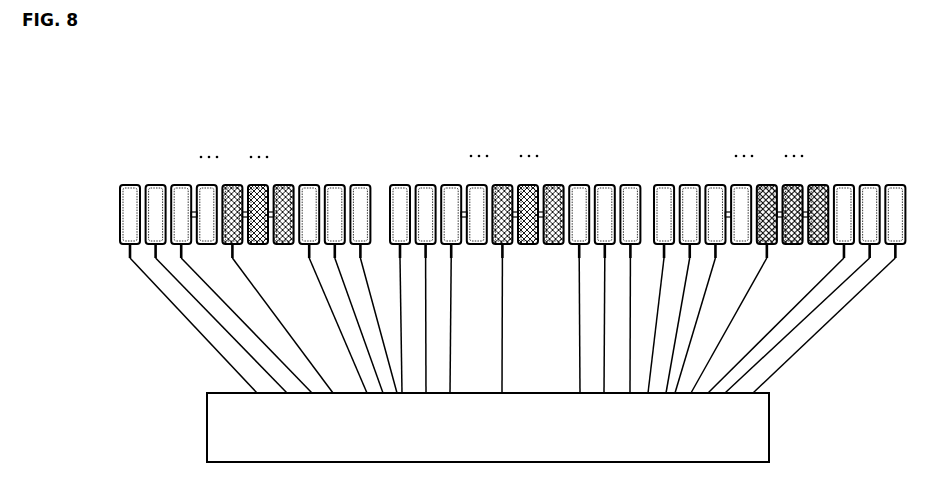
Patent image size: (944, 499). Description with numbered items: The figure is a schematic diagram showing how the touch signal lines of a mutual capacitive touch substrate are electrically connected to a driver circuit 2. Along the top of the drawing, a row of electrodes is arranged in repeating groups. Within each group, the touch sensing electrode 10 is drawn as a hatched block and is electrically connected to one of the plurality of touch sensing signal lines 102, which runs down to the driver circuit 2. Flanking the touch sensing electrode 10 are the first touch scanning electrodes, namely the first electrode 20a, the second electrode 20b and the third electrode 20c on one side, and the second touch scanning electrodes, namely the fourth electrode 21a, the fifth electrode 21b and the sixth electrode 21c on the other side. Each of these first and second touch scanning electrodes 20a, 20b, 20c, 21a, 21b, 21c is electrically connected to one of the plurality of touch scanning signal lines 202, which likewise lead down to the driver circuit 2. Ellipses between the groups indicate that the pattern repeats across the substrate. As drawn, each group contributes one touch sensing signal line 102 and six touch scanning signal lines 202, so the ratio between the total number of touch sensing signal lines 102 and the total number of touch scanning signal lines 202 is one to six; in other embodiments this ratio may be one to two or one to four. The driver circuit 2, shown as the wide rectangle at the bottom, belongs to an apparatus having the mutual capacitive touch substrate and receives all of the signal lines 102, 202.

The driver circuit 2 is at (488, 427).
The touch sensing electrode 10 is at (234, 183).
The first electrode 20a is at (133, 183).
The second electrode 20b is at (158, 183).
The third electrode 20c is at (183, 183).
The fourth electrode 21a is at (310, 183).
The fifth electrode 21b is at (335, 183).
The sixth electrode 21c is at (359, 183).
The touch sensing signal line 102 is at (248, 282).
The touch scanning signal line 202 is at (140, 271).